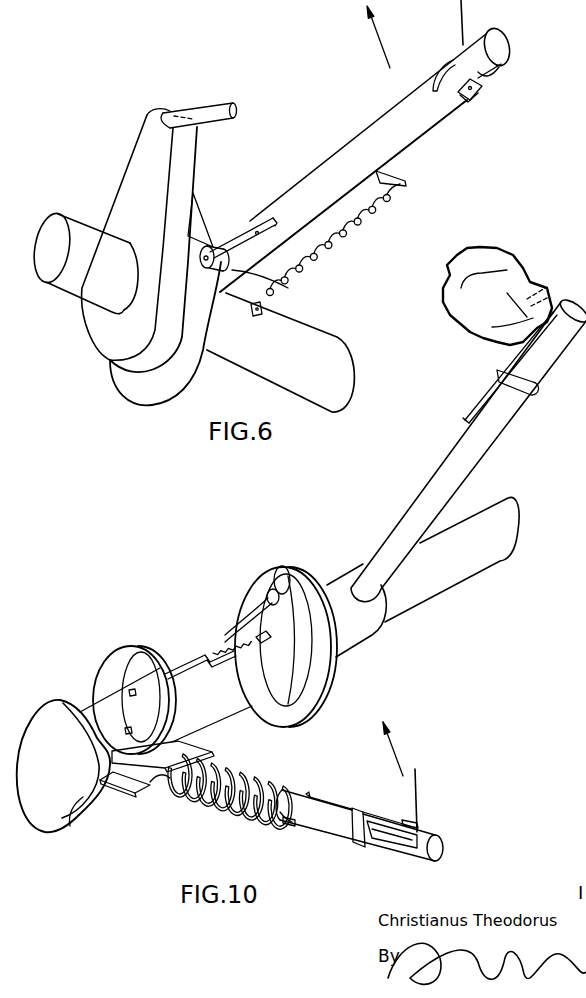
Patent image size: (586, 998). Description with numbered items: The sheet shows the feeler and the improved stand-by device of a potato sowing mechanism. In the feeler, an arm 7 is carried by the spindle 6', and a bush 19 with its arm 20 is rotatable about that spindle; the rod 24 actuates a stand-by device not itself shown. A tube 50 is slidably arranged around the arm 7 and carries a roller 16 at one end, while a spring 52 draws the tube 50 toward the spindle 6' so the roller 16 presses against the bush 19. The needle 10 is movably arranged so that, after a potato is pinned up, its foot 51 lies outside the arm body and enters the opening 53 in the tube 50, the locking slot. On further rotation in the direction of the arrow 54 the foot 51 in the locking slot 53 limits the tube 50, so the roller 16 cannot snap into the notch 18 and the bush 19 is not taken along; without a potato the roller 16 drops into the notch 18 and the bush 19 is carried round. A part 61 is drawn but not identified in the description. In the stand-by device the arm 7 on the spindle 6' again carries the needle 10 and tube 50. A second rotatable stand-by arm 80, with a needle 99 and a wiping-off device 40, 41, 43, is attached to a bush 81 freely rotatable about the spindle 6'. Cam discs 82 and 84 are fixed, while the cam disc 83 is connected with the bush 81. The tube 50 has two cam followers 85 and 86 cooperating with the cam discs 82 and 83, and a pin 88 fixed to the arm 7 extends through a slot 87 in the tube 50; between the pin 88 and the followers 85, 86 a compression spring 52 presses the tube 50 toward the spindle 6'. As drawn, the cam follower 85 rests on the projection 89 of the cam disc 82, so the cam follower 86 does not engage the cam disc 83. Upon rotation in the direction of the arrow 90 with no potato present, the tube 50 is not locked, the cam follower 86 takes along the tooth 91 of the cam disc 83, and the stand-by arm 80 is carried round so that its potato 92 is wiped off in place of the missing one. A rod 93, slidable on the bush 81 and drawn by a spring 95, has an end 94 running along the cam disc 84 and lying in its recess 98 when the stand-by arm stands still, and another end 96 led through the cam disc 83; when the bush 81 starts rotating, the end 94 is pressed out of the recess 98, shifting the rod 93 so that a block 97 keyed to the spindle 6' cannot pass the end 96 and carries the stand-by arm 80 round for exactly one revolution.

In FIG. 6, the arm 7 is at (503, 43).
In FIG. 10, the arm 7 is at (441, 853).
In FIG. 6, the needle 10 is at (462, 14).
In FIG. 10, the needle 10 is at (418, 797).
In FIG. 6, the roller 16 is at (222, 248).
In FIG. 6, the notch 18 is at (201, 243).
In FIG. 6, the bush 19 is at (194, 194).
In FIG. 6, the arm 20 is at (147, 142).
In FIG. 6, the rod 24 is at (220, 113).
In FIG. 6, the tube 50 is at (426, 129).
In FIG. 10, the tube 50 is at (387, 850).
In FIG. 6, the foot of the needle 51 is at (474, 90).
In FIG. 6, the spring 52 is at (345, 238).
In FIG. 10, the spring 52 is at (180, 800).
In FIG. 6, the locking slot 53 is at (467, 103).
In FIG. 6, the arrow 54 is at (384, 52).
In FIG. 6, the tube 61 is at (330, 338).
In FIG. 10, the spindle 6' is at (458, 559).
In FIG. 10, the wiping-off device 40 is at (493, 385).
In FIG. 10, the wiping-off device 41 is at (497, 370).
In FIG. 10, the wiping-off device 43 is at (465, 420).
In FIG. 10, the stand-by arm 80 is at (500, 422).
In FIG. 10, the bush 81 is at (342, 580).
In FIG. 10, the cam disc 82 is at (60, 702).
In FIG. 10, the cam disc 83 is at (138, 647).
In FIG. 10, the cam disc 84 is at (274, 570).
In FIG. 10, the cam follower 85 is at (128, 790).
In FIG. 10, the cam follower 86 is at (197, 753).
In FIG. 10, the slot 87 is at (293, 824).
In FIG. 10, the pin 88 is at (287, 823).
In FIG. 10, the projection 89 is at (86, 803).
In FIG. 10, the arrow 90 is at (392, 752).
In FIG. 10, the tooth 91 is at (162, 660).
In FIG. 10, the potato 92 is at (517, 273).
In FIG. 10, the rod 93 is at (207, 652).
In FIG. 10, the end of the rod 94 is at (263, 592).
In FIG. 10, the spring 95 is at (231, 647).
In FIG. 10, the end of the rod 96 is at (128, 690).
In FIG. 10, the block 97 is at (127, 730).
In FIG. 10, the recess 98 is at (282, 566).
In FIG. 10, the needle 99 is at (550, 291).